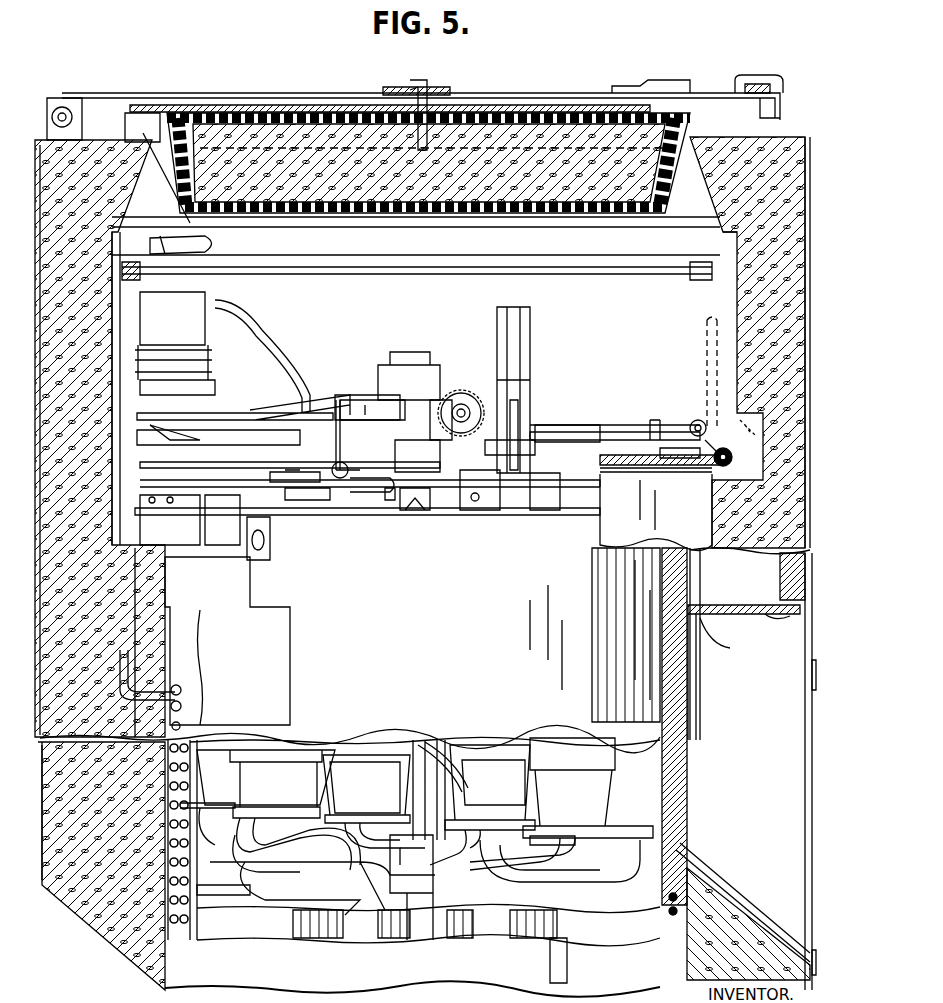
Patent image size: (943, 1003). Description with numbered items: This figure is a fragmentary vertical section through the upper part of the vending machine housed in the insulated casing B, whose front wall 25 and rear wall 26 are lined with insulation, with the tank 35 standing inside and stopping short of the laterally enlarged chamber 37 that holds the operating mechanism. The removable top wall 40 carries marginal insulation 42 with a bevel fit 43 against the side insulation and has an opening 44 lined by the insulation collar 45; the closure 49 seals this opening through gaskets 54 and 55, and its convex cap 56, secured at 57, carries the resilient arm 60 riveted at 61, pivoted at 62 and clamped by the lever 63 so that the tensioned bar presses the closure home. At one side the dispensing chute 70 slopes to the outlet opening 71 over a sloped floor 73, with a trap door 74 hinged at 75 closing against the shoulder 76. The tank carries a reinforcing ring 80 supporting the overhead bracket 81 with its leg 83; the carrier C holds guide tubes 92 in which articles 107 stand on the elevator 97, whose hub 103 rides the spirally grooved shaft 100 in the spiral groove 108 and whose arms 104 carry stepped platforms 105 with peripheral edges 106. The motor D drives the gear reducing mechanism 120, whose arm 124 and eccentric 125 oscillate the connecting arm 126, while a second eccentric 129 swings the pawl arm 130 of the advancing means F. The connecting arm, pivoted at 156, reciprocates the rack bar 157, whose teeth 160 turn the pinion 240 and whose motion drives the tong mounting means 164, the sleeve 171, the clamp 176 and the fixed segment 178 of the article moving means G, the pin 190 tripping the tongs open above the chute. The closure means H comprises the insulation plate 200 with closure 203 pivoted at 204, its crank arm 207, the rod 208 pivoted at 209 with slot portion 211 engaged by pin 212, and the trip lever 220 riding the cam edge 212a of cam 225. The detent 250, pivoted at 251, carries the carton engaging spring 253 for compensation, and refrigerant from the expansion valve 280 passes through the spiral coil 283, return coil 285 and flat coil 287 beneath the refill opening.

The front wall 25 is at (805, 700).
The rear wall 26 is at (50, 890).
The tank 35 is at (551, 630).
The upper laterally enlarged chamber 37 is at (590, 301).
The removable top wall 40 is at (770, 125).
The marginal insulation 42 is at (705, 225).
The bevel fit 43 is at (770, 115).
The opening 44 is at (255, 215).
The insulation collar 45 is at (125, 148).
The closure 49 is at (338, 105).
The gasket 54 is at (126, 125).
The gasket 55 is at (215, 240).
The metallic convexly shaped cap 56 is at (372, 95).
The securing point 57 is at (272, 112).
The resilient metal arm 60 is at (232, 98).
The rivet 61 is at (428, 90).
The pivot 62 is at (66, 105).
The lever 63 is at (785, 72).
The dispensing chute 70 is at (705, 520).
The outlet opening 71 is at (808, 882).
The floor 73 is at (743, 911).
The trap door 74 is at (745, 605).
The hinge 75 is at (795, 618).
The downwardly facing shoulder 76 is at (727, 641).
The reinforcing ring 80 is at (480, 510).
The overhead inverted U-shaped bracket 81 is at (430, 370).
The depending leg 83 is at (417, 457).
The guide tubes 92 is at (190, 868).
The elevator 97 is at (580, 882).
The spirally grooved removable shaft 100 is at (413, 792).
The hub portion 103 is at (422, 890).
The radially extending arms 104 is at (365, 880).
The platform 105 is at (265, 815).
The peripheral edge 106 is at (545, 836).
The articles 107 is at (568, 430).
The spiral groove 108 is at (440, 760).
The gear reducing mechanism 120 is at (235, 540).
The laterally extending arm 124 is at (232, 545).
The eccentric shaft 125 is at (175, 520).
The connecting arm 126 is at (260, 468).
The second eccentric 129 is at (190, 425).
The pawl arm 130 is at (318, 398).
The pivot 156 is at (292, 470).
The slidable rack bar 157 is at (315, 500).
The rack teeth 160 is at (500, 440).
The tong mounting means 164 is at (540, 376).
The sleeve 171 is at (530, 402).
The clamp 176 is at (530, 455).
The fixed segment 178 is at (598, 435).
The upstanding pin 190 is at (663, 420).
The insulation plate 200 is at (705, 478).
The closure 203 is at (640, 465).
The pivot 204 is at (739, 448).
The crank arm 207 is at (680, 448).
The connecting rod 208 is at (700, 420).
The pivot 209 is at (710, 410).
The horizontal slot portion 211 is at (372, 492).
The pin 212 is at (343, 480).
The sloping cam edge 212a is at (445, 525).
The pivoted trip lever 220 is at (395, 500).
The cam 225 is at (420, 510).
The operating pinion 240 is at (488, 385).
The detent 250 is at (360, 402).
The pivot 251 is at (382, 380).
The U-shaped carton engaging spring 253 is at (345, 442).
The expansion valve 280 is at (222, 352).
The spiral coil 283 is at (198, 925).
The return coil 285 is at (198, 890).
The flat coil 287 is at (338, 270).
The insulated casing B is at (125, 915).
The article carrier C is at (395, 745).
The motor D is at (290, 660).
The carrier advancing means F is at (266, 405).
The article moving means G is at (548, 435).
The motor control closure means H is at (545, 497).